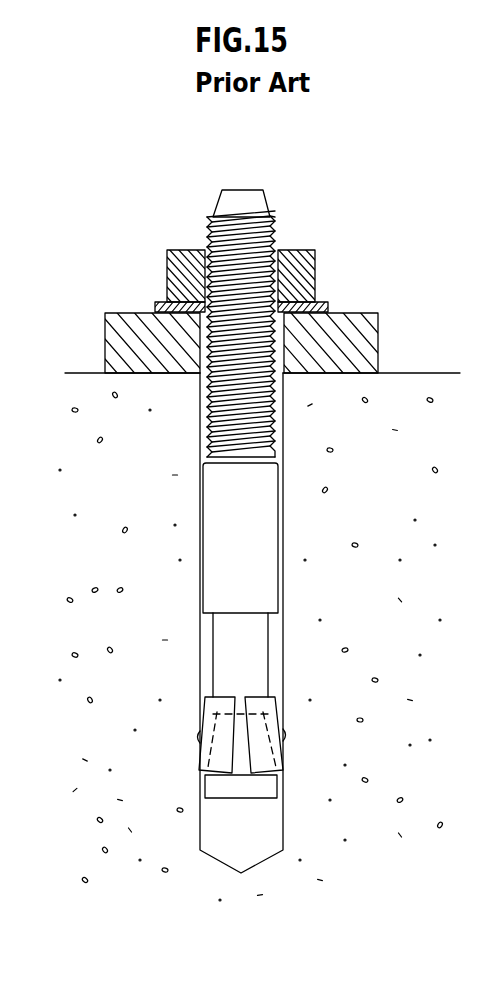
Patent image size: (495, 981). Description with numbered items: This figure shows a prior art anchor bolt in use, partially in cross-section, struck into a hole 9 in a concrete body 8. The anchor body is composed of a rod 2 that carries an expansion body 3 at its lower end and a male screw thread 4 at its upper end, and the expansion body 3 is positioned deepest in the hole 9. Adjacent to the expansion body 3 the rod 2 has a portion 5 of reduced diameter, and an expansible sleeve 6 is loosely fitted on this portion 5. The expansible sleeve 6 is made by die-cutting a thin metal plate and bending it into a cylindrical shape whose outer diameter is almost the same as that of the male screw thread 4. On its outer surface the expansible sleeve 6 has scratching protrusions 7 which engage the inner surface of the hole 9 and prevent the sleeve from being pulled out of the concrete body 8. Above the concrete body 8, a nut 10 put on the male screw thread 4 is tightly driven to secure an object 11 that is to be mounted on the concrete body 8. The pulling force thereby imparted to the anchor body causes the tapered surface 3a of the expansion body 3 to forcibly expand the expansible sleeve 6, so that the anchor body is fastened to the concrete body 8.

The rod 2 is at (253, 515).
The expansion body 3 is at (265, 790).
The tapered surface 3a is at (284, 753).
The male screw thread 4 is at (260, 237).
The portion of reduced diameter 5 is at (248, 665).
The expansible sleeve 6 is at (203, 717).
The scratching protrusions 7 is at (198, 738).
The concrete body 8 is at (407, 382).
The hole 9 is at (275, 628).
The nut 10 is at (183, 262).
The object 11 is at (130, 325).